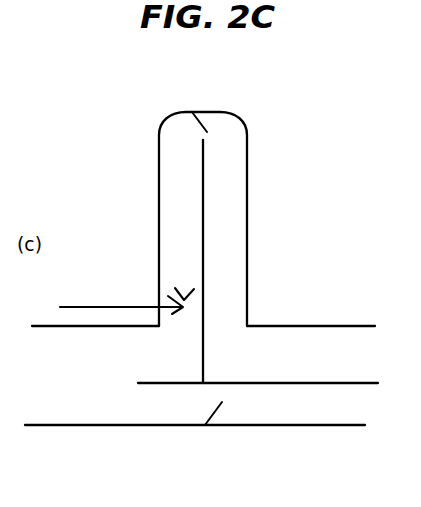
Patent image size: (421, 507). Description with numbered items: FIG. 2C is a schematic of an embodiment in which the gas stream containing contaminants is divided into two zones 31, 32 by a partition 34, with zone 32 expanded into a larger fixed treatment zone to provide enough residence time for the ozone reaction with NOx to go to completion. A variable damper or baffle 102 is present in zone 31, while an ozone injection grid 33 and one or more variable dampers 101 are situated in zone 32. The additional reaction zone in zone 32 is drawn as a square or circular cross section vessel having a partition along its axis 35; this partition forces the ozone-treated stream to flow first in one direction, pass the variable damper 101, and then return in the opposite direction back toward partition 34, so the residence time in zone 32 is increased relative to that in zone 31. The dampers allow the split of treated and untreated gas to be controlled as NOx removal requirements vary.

The variable damper 101 is at (200, 125).
The partition along the vessel axis 35 is at (225, 178).
The ozone injection grid 33 is at (168, 301).
The partition 34 is at (302, 380).
The zone 32 is at (353, 357).
The zone 31 is at (163, 407).
The variable damper or baffle 102 is at (214, 412).